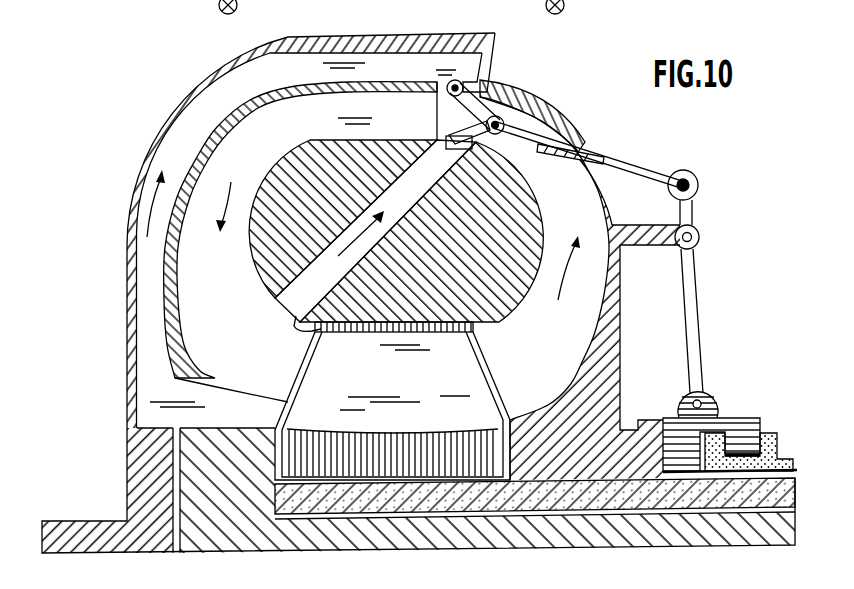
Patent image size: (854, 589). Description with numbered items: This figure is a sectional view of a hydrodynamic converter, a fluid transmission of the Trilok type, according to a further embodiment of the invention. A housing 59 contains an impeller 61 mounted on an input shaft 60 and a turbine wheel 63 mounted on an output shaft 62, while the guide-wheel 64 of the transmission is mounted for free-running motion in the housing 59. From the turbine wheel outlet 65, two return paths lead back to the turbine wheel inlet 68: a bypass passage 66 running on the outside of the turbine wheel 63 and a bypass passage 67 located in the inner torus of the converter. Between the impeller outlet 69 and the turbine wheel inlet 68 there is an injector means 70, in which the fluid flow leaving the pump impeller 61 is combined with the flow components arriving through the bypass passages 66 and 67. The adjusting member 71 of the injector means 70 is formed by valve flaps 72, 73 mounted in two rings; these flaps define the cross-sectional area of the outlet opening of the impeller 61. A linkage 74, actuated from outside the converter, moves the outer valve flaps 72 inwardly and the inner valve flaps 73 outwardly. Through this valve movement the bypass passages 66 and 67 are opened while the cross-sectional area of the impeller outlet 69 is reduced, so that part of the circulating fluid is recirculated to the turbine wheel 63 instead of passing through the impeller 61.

The housing 59 is at (720, 470).
The input shaft 60 is at (613, 353).
The impeller 61 is at (596, 160).
The output shaft 62 is at (197, 493).
The turbine wheel 63 is at (208, 236).
The guide-wheel 64 is at (318, 391).
The turbine wheel outlet 65 is at (285, 404).
The bypass passage 66 is at (297, 72).
The bypass passage 67 is at (400, 210).
The turbine wheel inlet 68 is at (430, 107).
The impeller outlet 69 is at (523, 128).
The injector means 70 is at (441, 62).
The adjusting member 71 is at (533, 28).
The outer valve flaps 72 is at (480, 62).
The inner valve flaps 73 is at (478, 100).
The linkage 74 is at (632, 166).